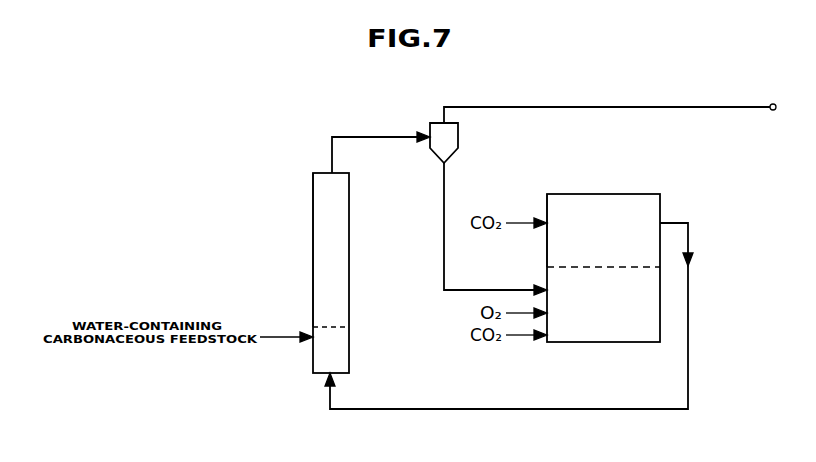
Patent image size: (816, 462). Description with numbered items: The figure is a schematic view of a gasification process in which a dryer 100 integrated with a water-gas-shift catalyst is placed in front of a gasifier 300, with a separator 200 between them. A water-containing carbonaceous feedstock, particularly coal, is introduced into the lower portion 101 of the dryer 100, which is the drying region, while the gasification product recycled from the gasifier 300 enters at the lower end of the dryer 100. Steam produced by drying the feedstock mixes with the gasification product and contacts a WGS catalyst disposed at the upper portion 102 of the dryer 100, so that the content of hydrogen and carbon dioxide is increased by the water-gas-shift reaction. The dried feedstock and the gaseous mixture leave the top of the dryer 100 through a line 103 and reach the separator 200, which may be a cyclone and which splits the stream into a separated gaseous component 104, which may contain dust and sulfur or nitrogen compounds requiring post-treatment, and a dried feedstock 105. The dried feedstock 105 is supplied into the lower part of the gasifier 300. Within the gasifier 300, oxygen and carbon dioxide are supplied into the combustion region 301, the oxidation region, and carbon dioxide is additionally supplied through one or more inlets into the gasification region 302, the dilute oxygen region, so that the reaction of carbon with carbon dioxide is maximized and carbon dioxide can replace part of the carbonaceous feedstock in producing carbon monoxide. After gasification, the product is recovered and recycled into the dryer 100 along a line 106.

The dryer 100 is at (298, 186).
The lower portion 101 is at (313, 367).
The upper portion 102 is at (313, 222).
The line 103 is at (381, 141).
The separated gaseous component 104 is at (610, 102).
The dried feedstock 105 is at (475, 229).
The line 106 is at (526, 316).
The separator 200 is at (460, 137).
The gasifier 300 is at (672, 187).
The combustion region 301 is at (642, 300).
The gasification region 302 is at (642, 240).